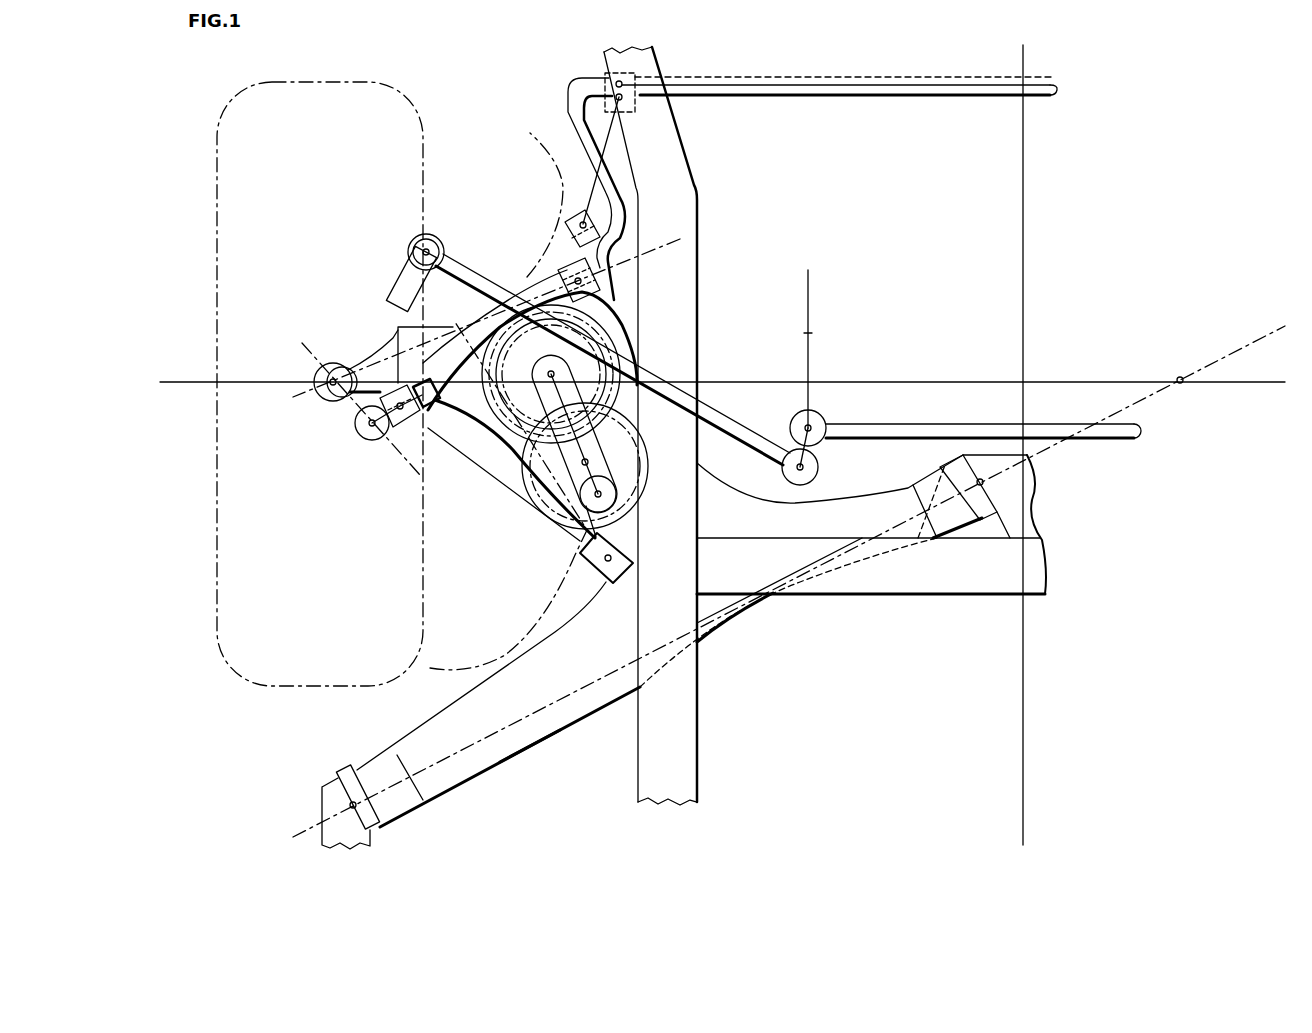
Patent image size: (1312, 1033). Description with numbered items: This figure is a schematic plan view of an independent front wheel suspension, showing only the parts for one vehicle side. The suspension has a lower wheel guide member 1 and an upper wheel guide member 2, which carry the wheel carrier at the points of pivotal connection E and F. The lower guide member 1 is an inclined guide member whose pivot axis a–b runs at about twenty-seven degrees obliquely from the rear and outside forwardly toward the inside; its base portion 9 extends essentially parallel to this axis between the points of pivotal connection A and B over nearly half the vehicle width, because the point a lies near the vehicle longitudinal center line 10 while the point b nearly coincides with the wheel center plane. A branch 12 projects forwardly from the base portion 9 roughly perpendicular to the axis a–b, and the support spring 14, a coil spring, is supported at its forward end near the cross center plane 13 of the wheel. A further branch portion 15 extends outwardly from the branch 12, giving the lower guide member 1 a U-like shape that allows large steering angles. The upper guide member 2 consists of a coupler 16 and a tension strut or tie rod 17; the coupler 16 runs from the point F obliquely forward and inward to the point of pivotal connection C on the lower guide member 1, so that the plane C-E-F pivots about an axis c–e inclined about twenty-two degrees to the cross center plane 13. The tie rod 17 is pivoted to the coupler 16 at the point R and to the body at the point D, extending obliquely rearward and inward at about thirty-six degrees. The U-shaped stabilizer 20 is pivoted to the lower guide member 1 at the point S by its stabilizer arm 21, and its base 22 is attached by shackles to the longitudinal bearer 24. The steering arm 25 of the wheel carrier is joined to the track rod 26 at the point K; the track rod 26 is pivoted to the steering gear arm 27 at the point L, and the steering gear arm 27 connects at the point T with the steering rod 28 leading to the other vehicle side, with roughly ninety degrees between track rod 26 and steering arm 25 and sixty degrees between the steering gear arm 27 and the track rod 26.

The lower wheel guide member 1 is at (540, 748).
The upper wheel guide member 2 is at (431, 428).
The base portion 9 is at (592, 703).
The vehicle longitudinal center line 10 is at (1025, 668).
The branch 12 is at (692, 447).
The cross center plane 13 is at (168, 381).
The support spring 14 is at (642, 498).
The further branch portion 15 is at (395, 335).
The coupler 16 is at (518, 283).
The tension strut or tie rod 17 is at (493, 460).
The stabilizer 20 is at (790, 87).
The stabilizer arm 21 is at (572, 122).
The base 22 is at (920, 97).
The longitudinal bearer 24 is at (675, 187).
The steering arm or drag link 25 is at (400, 287).
The track rod or tie bar 26 is at (742, 432).
The steering gear arm 27 is at (810, 368).
The steering rod 28 is at (905, 425).
The point of pivotal connection A is at (982, 483).
The point of pivotal connection B is at (353, 807).
The point of pivotal connection C is at (603, 283).
The point of pivotal connection D is at (603, 578).
The point of pivotal connection E is at (325, 395).
The point of pivotal connection F is at (355, 425).
The point of pivotal connection K is at (432, 248).
The point of pivotal connection L is at (822, 466).
The point of pivotal connection R is at (394, 424).
The point of pivotal connection S is at (567, 215).
The point of pivotal connection T is at (815, 420).
The point of pivotal connection a is at (1146, 389).
The point of pivotal connection b is at (312, 820).
The pivot axis point c is at (660, 252).
The pivot axis point e is at (295, 396).